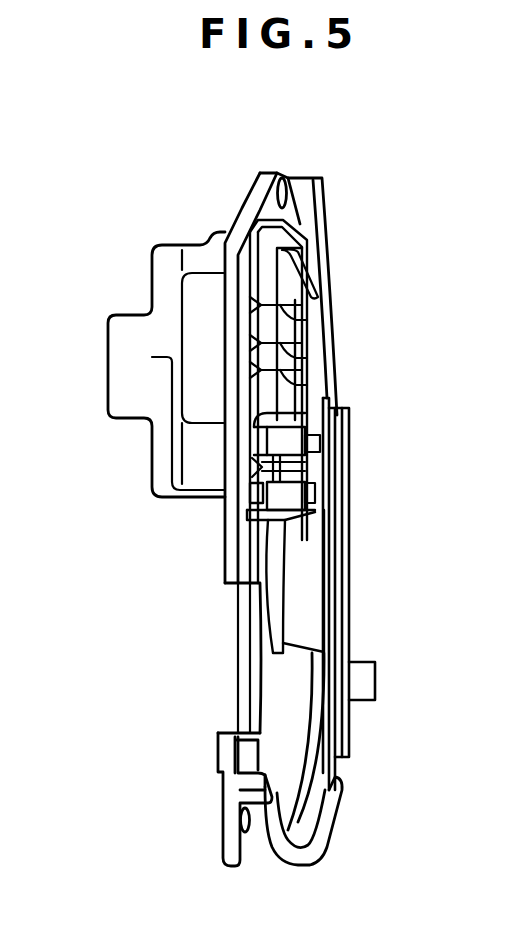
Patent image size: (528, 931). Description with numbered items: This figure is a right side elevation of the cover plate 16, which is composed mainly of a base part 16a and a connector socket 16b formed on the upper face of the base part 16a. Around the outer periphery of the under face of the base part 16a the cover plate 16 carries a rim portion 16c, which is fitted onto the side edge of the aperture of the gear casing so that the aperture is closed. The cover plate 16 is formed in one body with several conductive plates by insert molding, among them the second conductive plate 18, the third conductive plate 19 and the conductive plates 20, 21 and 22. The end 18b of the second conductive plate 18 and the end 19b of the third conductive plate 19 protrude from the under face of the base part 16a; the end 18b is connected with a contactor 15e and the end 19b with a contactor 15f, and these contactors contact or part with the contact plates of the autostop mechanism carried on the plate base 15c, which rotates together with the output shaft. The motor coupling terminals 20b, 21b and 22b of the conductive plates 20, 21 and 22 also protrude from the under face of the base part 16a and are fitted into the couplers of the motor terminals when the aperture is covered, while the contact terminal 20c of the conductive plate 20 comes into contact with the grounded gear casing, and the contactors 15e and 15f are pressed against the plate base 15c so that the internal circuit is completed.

The cover plate 16 is at (332, 225).
The base part 16a is at (282, 702).
The connector socket 16b is at (157, 455).
The rim portion 16c is at (314, 814).
The plate base 15c is at (349, 632).
The contactor 15e is at (312, 450).
The contactor 15f is at (313, 505).
The second conductive plate 18 is at (290, 438).
The end of second conductive plate 18b is at (270, 465).
The third conductive plate 19 is at (290, 493).
The end of third conductive plate 19b is at (285, 520).
The conductive plate 20 is at (318, 305).
The motor coupling terminal 20b is at (320, 323).
The contact terminal 20c is at (300, 260).
The conductive plate 21 is at (312, 344).
The motor coupling terminal 21b is at (308, 360).
The conductive plate 22 is at (313, 377).
The motor coupling terminal 22b is at (313, 392).